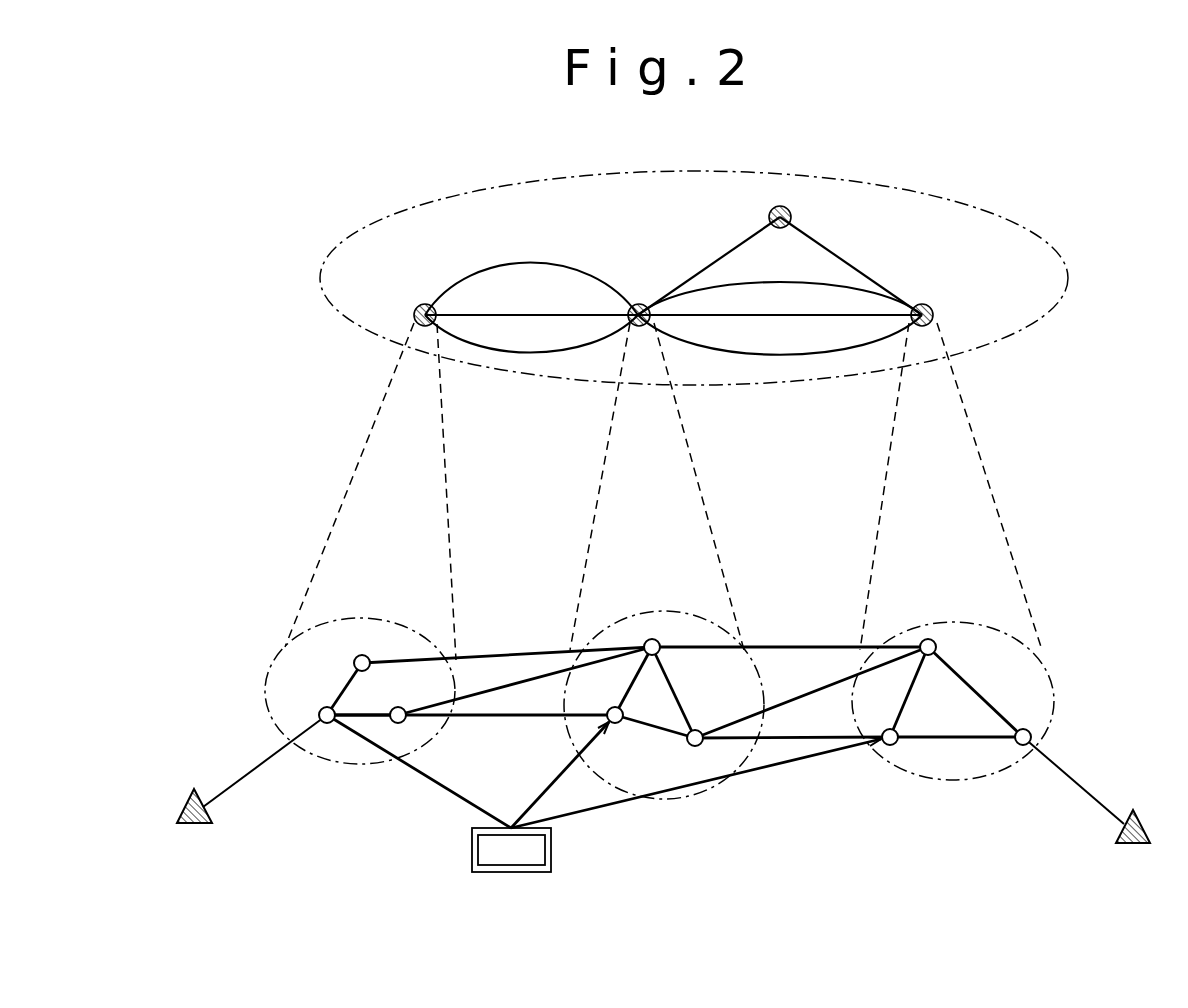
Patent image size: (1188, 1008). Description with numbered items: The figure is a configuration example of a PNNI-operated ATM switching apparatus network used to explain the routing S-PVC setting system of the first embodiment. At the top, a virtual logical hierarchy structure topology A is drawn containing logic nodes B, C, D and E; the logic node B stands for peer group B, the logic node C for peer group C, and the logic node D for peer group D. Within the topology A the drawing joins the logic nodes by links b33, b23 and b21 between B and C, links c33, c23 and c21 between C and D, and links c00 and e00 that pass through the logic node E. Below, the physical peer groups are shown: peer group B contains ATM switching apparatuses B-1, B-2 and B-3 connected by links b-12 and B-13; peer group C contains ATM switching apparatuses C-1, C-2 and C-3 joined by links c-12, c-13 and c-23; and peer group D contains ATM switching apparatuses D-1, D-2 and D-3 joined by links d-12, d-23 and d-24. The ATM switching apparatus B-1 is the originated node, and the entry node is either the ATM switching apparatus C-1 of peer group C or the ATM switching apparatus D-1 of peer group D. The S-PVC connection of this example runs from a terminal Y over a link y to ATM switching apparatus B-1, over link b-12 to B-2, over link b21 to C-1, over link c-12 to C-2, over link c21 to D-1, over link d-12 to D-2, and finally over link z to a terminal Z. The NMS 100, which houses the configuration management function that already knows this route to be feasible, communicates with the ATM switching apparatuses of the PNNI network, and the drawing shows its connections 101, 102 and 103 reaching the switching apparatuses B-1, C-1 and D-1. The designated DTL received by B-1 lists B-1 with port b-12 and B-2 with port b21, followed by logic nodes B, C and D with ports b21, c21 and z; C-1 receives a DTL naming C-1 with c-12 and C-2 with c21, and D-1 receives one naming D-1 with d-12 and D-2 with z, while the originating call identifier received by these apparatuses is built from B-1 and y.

The virtual logical hierarchy structure topology A is at (452, 193).
The logic node (peer group B) B is at (428, 304).
The logic node (peer group C) C is at (638, 304).
The peer group D is at (933, 311).
The abstract node E is at (792, 215).
The abstract link b33 (B-3 to C-3) b33 is at (553, 270).
The abstract link b23 (B-2 to C-3) b23 is at (557, 313).
The link b21 is at (497, 349).
The abstract link c33 (C-3 to D-3) c33 is at (877, 292).
The abstract link c23 (C-2 to D-3) c23 is at (812, 316).
The link c21 is at (728, 355).
The abstract link c00 (C to E) c00 is at (712, 268).
The abstract link e00 (E to D) e00 is at (858, 272).
The ATM switching apparatus B-1 is at (320, 730).
The ATM switching apparatus B-2 is at (405, 730).
The node B-3 of domain B B-3 is at (362, 654).
The intra-domain link B-1 to B-3 B-13 is at (346, 690).
The link b-12 is at (365, 713).
The ATM switching apparatus C-1 is at (601, 728).
The ATM switching apparatus C-2 is at (701, 748).
The node C-3 of domain C C-3 is at (655, 637).
The intra-domain link C-1 to C-3 c-13 is at (628, 664).
The intra-domain link C-3 to C-2 c-23 is at (680, 696).
The link c-12 is at (652, 730).
The ATM switching apparatus D-1 is at (881, 748).
The ATM switching apparatus D-2 is at (1020, 750).
The node D-3 of domain D D-3 is at (930, 637).
The intra-domain link D-1 to D-3 d-23 is at (913, 690).
The intra-domain link D-3 to D-2 d-24 is at (984, 690).
The link d-12 is at (926, 743).
The terminal Y is at (186, 790).
The link y is at (248, 771).
The terminal Z is at (1138, 823).
The link z is at (1081, 781).
The NMS 100 is at (472, 858).
The control link NMS to B-1 101 is at (433, 792).
The control link NMS to C-1 102 is at (548, 797).
The control link NMS to D-1 103 is at (640, 812).